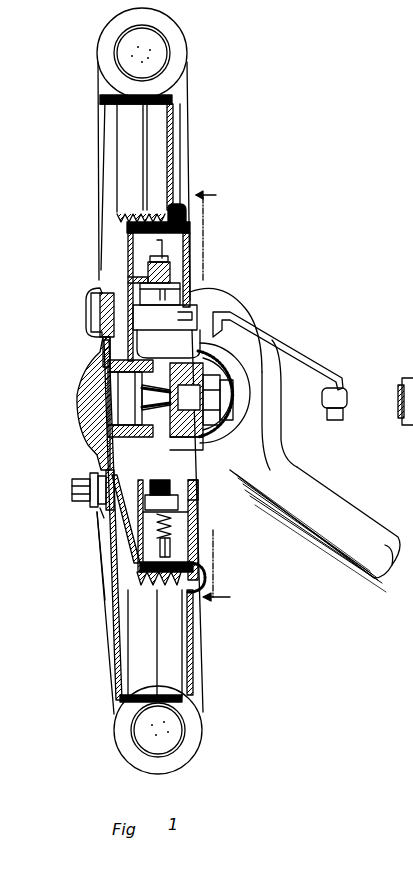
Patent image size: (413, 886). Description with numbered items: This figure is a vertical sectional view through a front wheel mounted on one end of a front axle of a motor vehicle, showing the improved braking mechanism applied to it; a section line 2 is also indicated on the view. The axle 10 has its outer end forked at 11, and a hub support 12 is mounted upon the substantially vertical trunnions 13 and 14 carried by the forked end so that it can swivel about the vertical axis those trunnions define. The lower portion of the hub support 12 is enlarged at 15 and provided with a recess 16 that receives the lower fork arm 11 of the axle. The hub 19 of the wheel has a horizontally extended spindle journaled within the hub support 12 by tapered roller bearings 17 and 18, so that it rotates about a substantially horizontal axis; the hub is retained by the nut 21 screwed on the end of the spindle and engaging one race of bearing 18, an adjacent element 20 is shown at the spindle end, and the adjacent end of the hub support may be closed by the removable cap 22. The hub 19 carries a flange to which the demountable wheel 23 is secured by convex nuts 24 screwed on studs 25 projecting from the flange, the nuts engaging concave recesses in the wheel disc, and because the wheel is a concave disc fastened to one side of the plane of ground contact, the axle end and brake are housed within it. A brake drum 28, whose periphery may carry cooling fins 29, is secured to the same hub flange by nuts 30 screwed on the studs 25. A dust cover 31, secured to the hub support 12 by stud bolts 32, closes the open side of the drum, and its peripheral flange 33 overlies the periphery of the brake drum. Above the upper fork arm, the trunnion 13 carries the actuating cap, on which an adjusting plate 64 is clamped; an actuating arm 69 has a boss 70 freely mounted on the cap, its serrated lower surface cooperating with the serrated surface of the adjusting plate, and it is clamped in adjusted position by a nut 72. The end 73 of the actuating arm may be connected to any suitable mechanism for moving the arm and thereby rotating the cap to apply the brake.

The section line 2- 2 is at (219, 396).
The axle 10 is at (257, 448).
The forked end 11 is at (200, 332).
The hub support 12 is at (103, 448).
The trunnion 13 is at (262, 327).
The trunnion 14 is at (203, 460).
The enlarged lower portion 15 is at (100, 512).
The recess 16 is at (72, 479).
The tapered roller bearing 17 is at (103, 362).
The tapered roller bearing 18 is at (210, 372).
The hub 19 is at (88, 400).
The ratchet housing 20 is at (228, 388).
The nut 21 is at (235, 400).
The removable cap 22 is at (236, 410).
The demountable wheel 23 is at (110, 567).
The convex nuts 24 is at (80, 487).
The studs 25 is at (92, 495).
The brake drum 28 is at (122, 548).
The fins 29 is at (150, 584).
The nuts 30 is at (100, 550).
The dust cover 31 is at (202, 545).
The stud bolts 32 is at (201, 490).
The peripheral flange 33 is at (205, 603).
The adjusting plate 64 is at (140, 320).
The actuating arm 69 is at (212, 352).
The boss 70 is at (188, 288).
The nut 72 is at (167, 313).
The end 73 is at (336, 400).